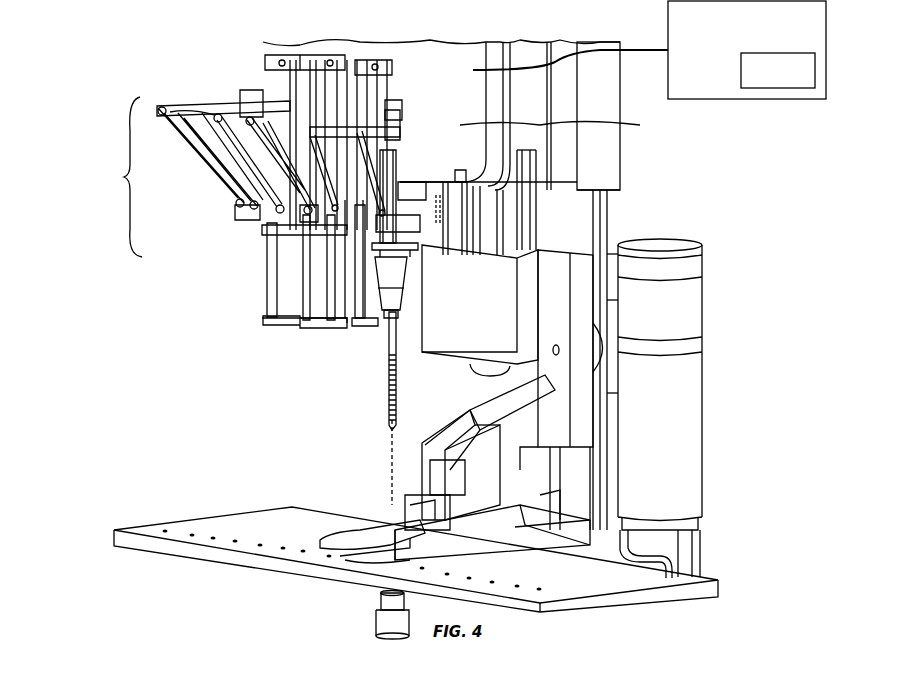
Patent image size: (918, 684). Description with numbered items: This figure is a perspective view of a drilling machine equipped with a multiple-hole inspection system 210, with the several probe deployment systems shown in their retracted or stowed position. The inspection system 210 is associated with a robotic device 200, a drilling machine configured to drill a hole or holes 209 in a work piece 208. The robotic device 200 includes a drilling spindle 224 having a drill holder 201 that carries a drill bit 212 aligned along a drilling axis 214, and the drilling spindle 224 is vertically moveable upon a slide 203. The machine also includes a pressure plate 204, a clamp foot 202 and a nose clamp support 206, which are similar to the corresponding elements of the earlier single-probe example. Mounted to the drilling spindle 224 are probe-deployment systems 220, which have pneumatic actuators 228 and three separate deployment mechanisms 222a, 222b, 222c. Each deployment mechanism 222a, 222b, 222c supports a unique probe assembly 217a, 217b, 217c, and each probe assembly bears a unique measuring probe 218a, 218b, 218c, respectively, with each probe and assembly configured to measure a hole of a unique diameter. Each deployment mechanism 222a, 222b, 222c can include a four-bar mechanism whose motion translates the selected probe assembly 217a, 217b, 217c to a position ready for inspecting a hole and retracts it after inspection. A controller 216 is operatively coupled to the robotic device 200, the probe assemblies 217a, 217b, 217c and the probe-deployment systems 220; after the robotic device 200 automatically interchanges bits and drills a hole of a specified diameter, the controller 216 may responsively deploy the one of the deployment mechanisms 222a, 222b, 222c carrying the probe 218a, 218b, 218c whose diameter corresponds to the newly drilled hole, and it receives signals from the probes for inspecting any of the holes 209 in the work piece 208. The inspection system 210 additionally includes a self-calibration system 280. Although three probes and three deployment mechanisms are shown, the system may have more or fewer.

The robotic device 200 is at (458, 33).
The drill holder 201 is at (395, 267).
The clamp foot 202 is at (386, 622).
The slide 203 is at (547, 182).
The pressure plate 204 is at (347, 547).
The nose clamp support 206 is at (381, 598).
The work piece 208 is at (172, 554).
The holes 209 is at (192, 533).
The multiple-hole inspection system 210 is at (120, 98).
The drill bit 212 is at (387, 342).
The drilling axis 214 is at (390, 482).
The controller 216 is at (735, 88).
The first probe assembly 217a is at (264, 283).
The second probe assembly 217b is at (325, 291).
The third probe assembly 217c is at (395, 287).
The first measuring probe 218a is at (300, 260).
The second measuring probe 218b is at (320, 327).
The third measuring probe 218c is at (398, 313).
The probe-deployment systems 220 is at (114, 177).
The first deployment mechanism 222a is at (203, 100).
The second deployment mechanism 222b is at (218, 172).
The third deployment mechanism 222c is at (388, 108).
The drilling spindle 224 is at (537, 116).
The pneumatic actuators 228 is at (300, 115).
The self-calibration system 280 is at (278, 328).